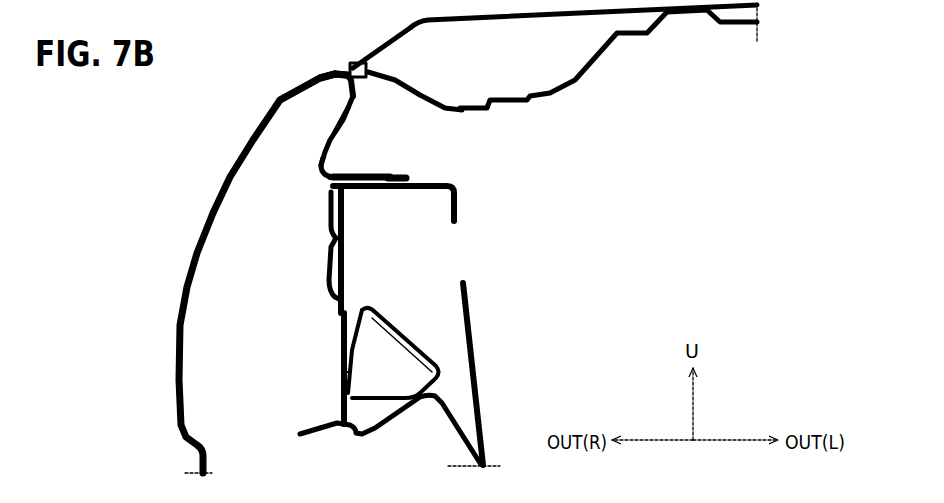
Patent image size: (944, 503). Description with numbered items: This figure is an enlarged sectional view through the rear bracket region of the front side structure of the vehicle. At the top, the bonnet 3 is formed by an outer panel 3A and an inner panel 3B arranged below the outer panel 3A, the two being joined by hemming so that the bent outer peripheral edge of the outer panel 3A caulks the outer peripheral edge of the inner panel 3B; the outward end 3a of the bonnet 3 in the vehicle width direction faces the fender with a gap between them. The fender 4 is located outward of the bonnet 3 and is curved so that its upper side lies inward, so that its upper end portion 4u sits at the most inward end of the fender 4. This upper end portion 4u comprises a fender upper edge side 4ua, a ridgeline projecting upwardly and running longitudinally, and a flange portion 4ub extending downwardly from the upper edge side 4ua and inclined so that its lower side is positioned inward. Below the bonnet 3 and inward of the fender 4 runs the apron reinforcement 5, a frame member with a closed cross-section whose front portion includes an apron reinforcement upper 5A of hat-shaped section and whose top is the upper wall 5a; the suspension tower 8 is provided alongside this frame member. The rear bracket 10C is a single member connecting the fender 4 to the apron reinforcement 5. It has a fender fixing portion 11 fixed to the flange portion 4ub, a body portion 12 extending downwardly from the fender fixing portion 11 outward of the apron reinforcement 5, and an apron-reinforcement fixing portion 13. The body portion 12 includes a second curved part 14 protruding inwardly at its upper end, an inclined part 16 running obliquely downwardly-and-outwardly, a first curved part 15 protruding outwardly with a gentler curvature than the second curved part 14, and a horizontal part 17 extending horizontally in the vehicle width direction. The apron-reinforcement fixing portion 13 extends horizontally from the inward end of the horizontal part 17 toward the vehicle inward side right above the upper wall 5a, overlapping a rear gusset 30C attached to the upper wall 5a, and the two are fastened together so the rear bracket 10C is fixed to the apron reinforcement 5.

The bonnet 3 is at (600, 70).
The outer panel 3A is at (397, 44).
The inner panel 3B is at (405, 74).
The outward end of the bonnet 3a is at (350, 66).
The fender 4 is at (176, 283).
The fender upper end portion 4u is at (290, 99).
The fender upper edge side 4ua is at (337, 74).
The flange portion 4ub is at (346, 84).
The apron reinforcement 5 is at (458, 202).
The upper wall 5a is at (428, 183).
The apron reinforcement upper 5A is at (460, 218).
The suspension tower 8 is at (434, 428).
The rear bracket 10C is at (260, 199).
The fender fixing portion 11 is at (343, 112).
The body portion 12 is at (329, 178).
The apron-reinforcement fixing portion 13 is at (395, 172).
The second curved part 14 is at (357, 103).
The first curved part 15 is at (330, 180).
The inclined part 16 is at (320, 158).
The horizontal part 17 is at (353, 170).
The rear gusset 30C is at (325, 243).